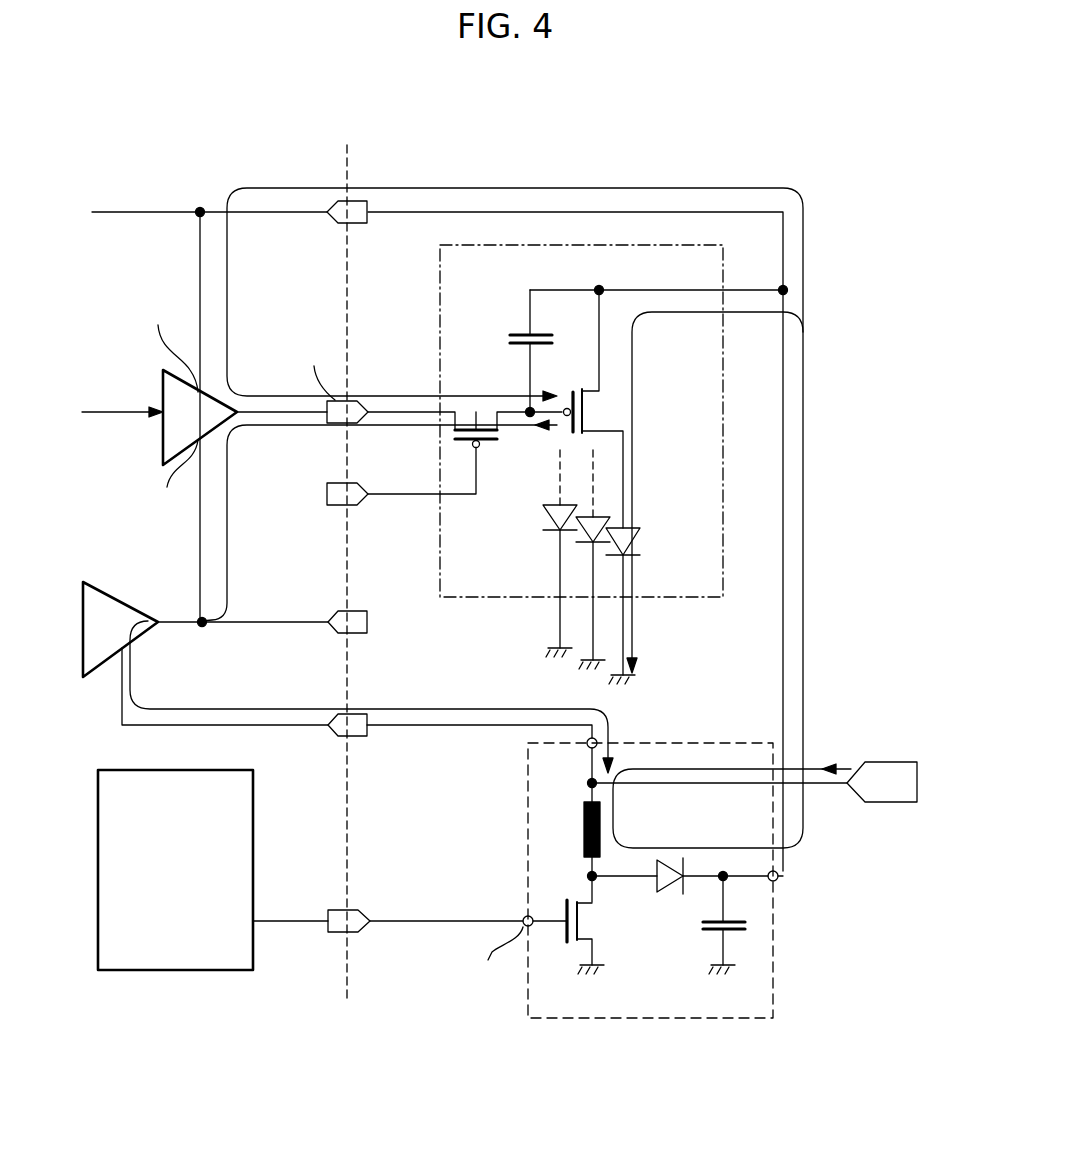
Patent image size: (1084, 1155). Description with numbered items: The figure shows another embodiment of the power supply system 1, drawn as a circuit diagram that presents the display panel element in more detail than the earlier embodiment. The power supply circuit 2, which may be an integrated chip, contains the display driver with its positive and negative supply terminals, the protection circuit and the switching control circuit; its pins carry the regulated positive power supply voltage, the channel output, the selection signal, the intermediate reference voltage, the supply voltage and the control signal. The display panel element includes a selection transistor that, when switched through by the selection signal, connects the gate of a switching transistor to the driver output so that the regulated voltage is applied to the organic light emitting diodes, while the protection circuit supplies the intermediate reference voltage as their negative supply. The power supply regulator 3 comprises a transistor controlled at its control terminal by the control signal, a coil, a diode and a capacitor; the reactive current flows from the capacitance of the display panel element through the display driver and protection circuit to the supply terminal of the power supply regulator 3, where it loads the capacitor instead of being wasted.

The power supply system 1 is at (575, 147).
The power supply circuit 2 is at (190, 182).
The power supply regulator 3 is at (681, 1020).